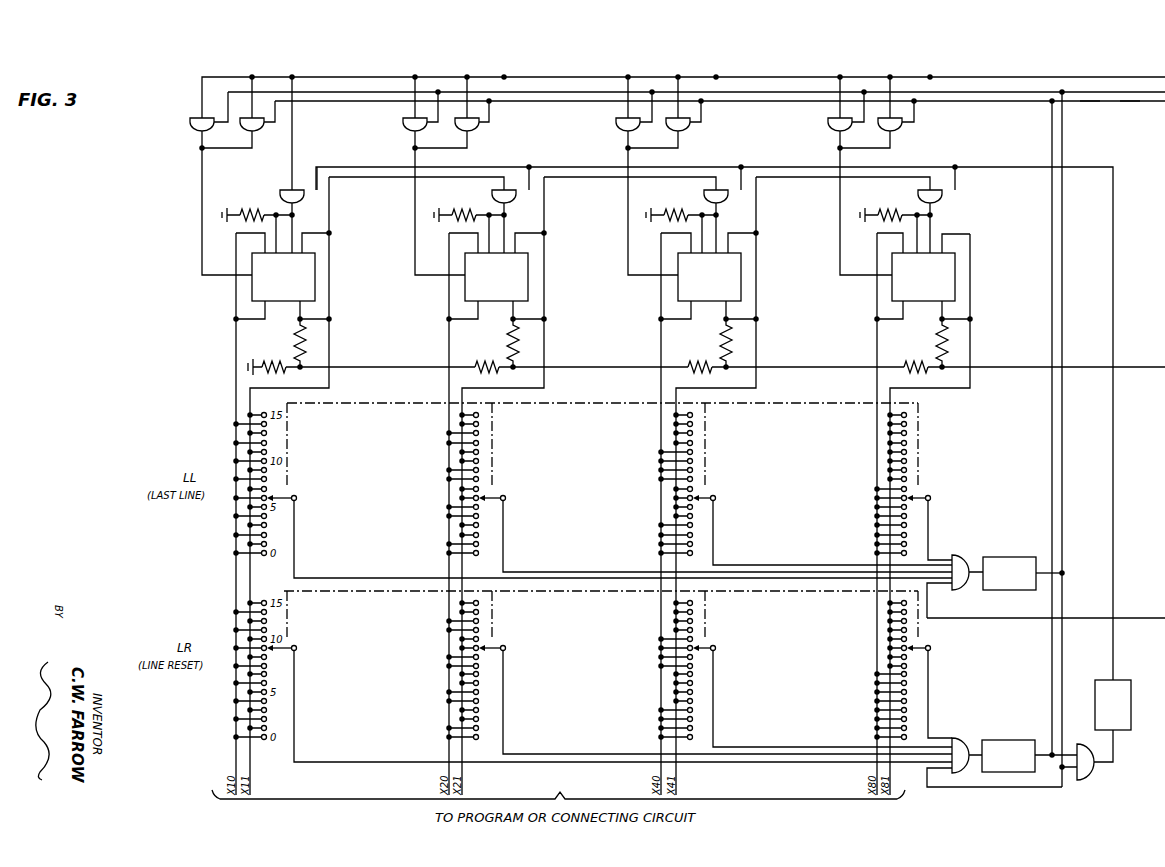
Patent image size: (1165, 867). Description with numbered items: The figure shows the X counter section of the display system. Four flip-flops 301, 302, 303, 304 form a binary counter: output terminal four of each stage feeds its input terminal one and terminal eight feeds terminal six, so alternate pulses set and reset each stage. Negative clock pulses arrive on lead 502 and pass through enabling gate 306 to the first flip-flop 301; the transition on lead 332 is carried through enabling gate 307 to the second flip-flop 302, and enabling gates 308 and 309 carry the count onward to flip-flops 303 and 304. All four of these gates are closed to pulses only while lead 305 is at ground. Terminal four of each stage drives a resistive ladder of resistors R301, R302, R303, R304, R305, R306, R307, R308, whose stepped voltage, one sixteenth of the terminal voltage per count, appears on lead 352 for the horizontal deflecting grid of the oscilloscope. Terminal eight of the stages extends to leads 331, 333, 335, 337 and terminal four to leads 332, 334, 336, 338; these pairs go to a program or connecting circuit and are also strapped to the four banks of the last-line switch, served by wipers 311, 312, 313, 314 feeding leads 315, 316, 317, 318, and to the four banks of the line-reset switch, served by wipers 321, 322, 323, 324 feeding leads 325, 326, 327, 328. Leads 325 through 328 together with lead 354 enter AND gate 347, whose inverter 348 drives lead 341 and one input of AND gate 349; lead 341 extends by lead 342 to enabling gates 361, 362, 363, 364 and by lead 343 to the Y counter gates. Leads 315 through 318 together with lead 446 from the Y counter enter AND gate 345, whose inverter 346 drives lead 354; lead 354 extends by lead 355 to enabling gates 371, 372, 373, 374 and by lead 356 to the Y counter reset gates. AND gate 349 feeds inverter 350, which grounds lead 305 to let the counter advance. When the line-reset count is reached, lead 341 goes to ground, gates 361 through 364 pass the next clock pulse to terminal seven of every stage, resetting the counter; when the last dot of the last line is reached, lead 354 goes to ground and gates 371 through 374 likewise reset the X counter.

The lead 502 is at (216, 77).
The lead 355 is at (754, 92).
The lead 342 is at (766, 101).
The lead 356 is at (1090, 101).
The lead 343 is at (1131, 101).
The enabling gate 371 is at (192, 130).
The enabling gate 361 is at (256, 131).
The enabling gate 372 is at (405, 130).
The enabling gate 362 is at (471, 131).
The enabling gate 373 is at (618, 130).
The enabling gate 363 is at (682, 131).
The enabling gate 374 is at (830, 130).
The enabling gate 364 is at (894, 131).
The lead 305 is at (504, 167).
The enabling gate 306 is at (280, 196).
The enabling gate 307 is at (492, 196).
The enabling gate 308 is at (704, 196).
The enabling gate 309 is at (918, 196).
The flip-flop 301 is at (284, 304).
The flip-flop 302 is at (497, 304).
The flip-flop 303 is at (710, 304).
The flip-flop 304 is at (924, 304).
The lead 331 is at (236, 345).
The lead 332 is at (329, 345).
The lead 333 is at (449, 345).
The lead 334 is at (544, 345).
The lead 335 is at (661, 345).
The lead 336 is at (756, 345).
The lead 337 is at (877, 345).
The lead 338 is at (970, 345).
The resistor R301 is at (262, 373).
The resistor R302 is at (295, 347).
The resistor R303 is at (475, 373).
The resistor R304 is at (508, 347).
The resistor R305 is at (688, 373).
The resistor R306 is at (721, 347).
The resistor R307 is at (904, 373).
The resistor R308 is at (937, 347).
The lead 352 is at (1140, 367).
The wiper 311 is at (295, 495).
The wiper 312 is at (504, 495).
The wiper 313 is at (714, 495).
The wiper 314 is at (929, 495).
The lead 315 is at (361, 578).
The lead 316 is at (565, 572).
The lead 317 is at (772, 565).
The lead 318 is at (928, 541).
The wiper 321 is at (295, 645).
The wiper 322 is at (504, 645).
The wiper 323 is at (714, 645).
The wiper 324 is at (929, 645).
The lead 325 is at (361, 762).
The lead 326 is at (565, 754).
The lead 327 is at (772, 747).
The lead 328 is at (928, 689).
The AND gate 345 is at (953, 590).
The inverter 346 is at (1006, 557).
The AND gate 347 is at (958, 745).
The inverter 348 is at (1006, 737).
The AND gate 349 is at (1085, 777).
The inverter 350 is at (1095, 680).
The lead 341 is at (1052, 663).
The lead 354 is at (1062, 606).
The lead 446 is at (1140, 613).